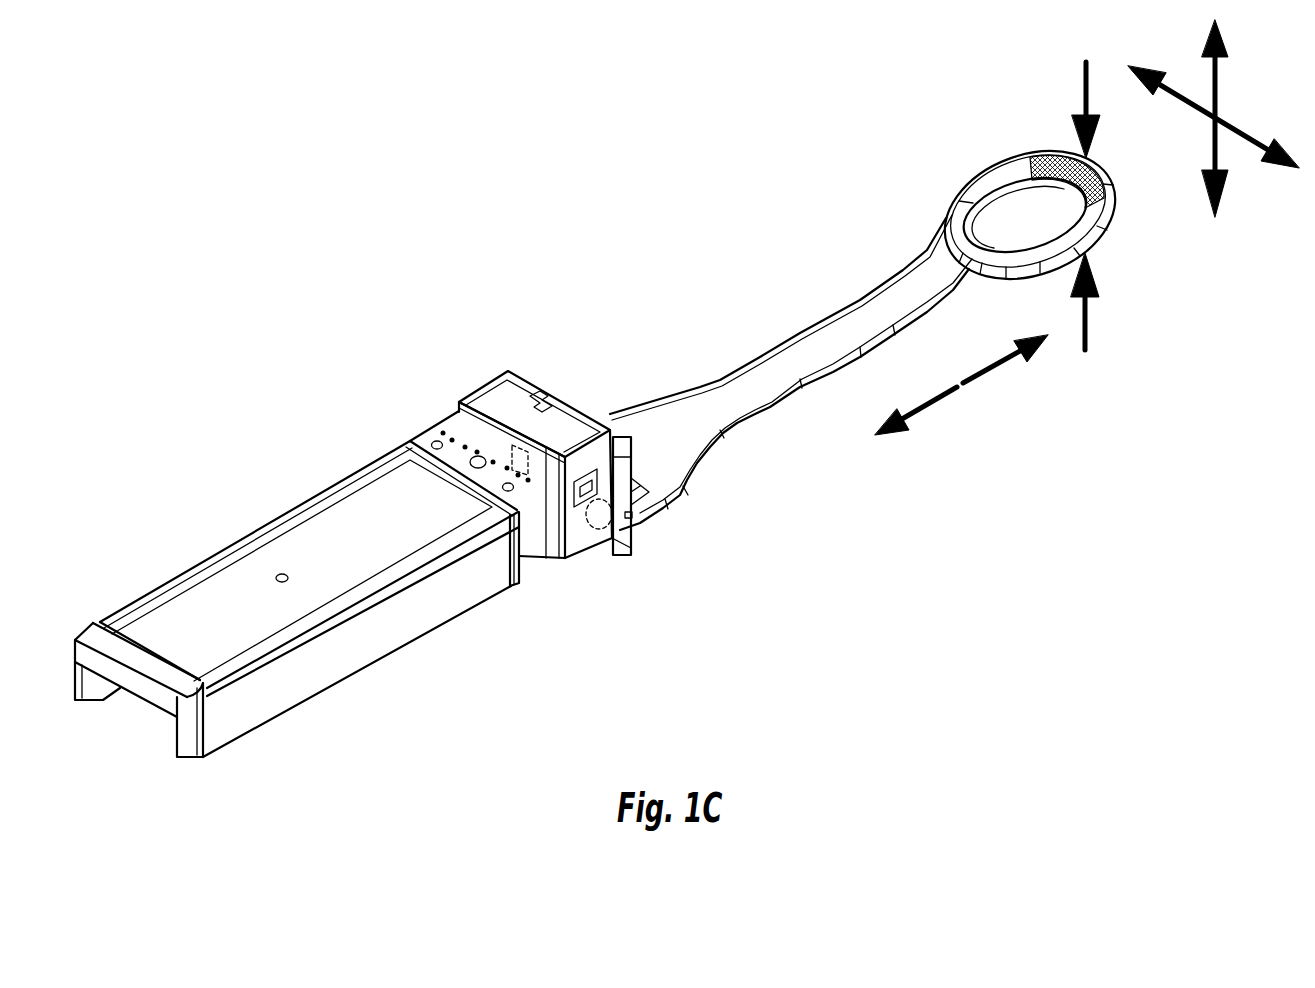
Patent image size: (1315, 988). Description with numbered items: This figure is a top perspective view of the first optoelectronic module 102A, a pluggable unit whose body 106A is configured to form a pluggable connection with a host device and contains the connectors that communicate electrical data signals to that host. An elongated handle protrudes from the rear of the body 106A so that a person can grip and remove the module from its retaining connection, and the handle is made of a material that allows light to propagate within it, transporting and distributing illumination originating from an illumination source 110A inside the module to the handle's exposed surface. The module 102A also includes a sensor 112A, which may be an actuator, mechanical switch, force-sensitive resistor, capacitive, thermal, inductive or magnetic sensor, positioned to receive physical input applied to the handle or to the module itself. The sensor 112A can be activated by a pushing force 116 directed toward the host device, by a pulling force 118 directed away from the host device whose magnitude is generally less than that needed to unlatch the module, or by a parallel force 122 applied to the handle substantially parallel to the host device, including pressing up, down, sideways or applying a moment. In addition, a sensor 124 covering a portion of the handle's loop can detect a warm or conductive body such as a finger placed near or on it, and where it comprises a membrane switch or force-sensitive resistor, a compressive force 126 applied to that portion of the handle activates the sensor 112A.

The first optoelectronic module 102A is at (297, 584).
The body 106A is at (302, 570).
The illumination source 110A is at (554, 498).
The sensor 112A is at (449, 443).
The pushing force 116 is at (941, 416).
The pulling force 118 is at (1010, 376).
The parallel force 122 is at (1213, 118).
The sensor 124 is at (1053, 163).
The compressive force 126 is at (1081, 209).